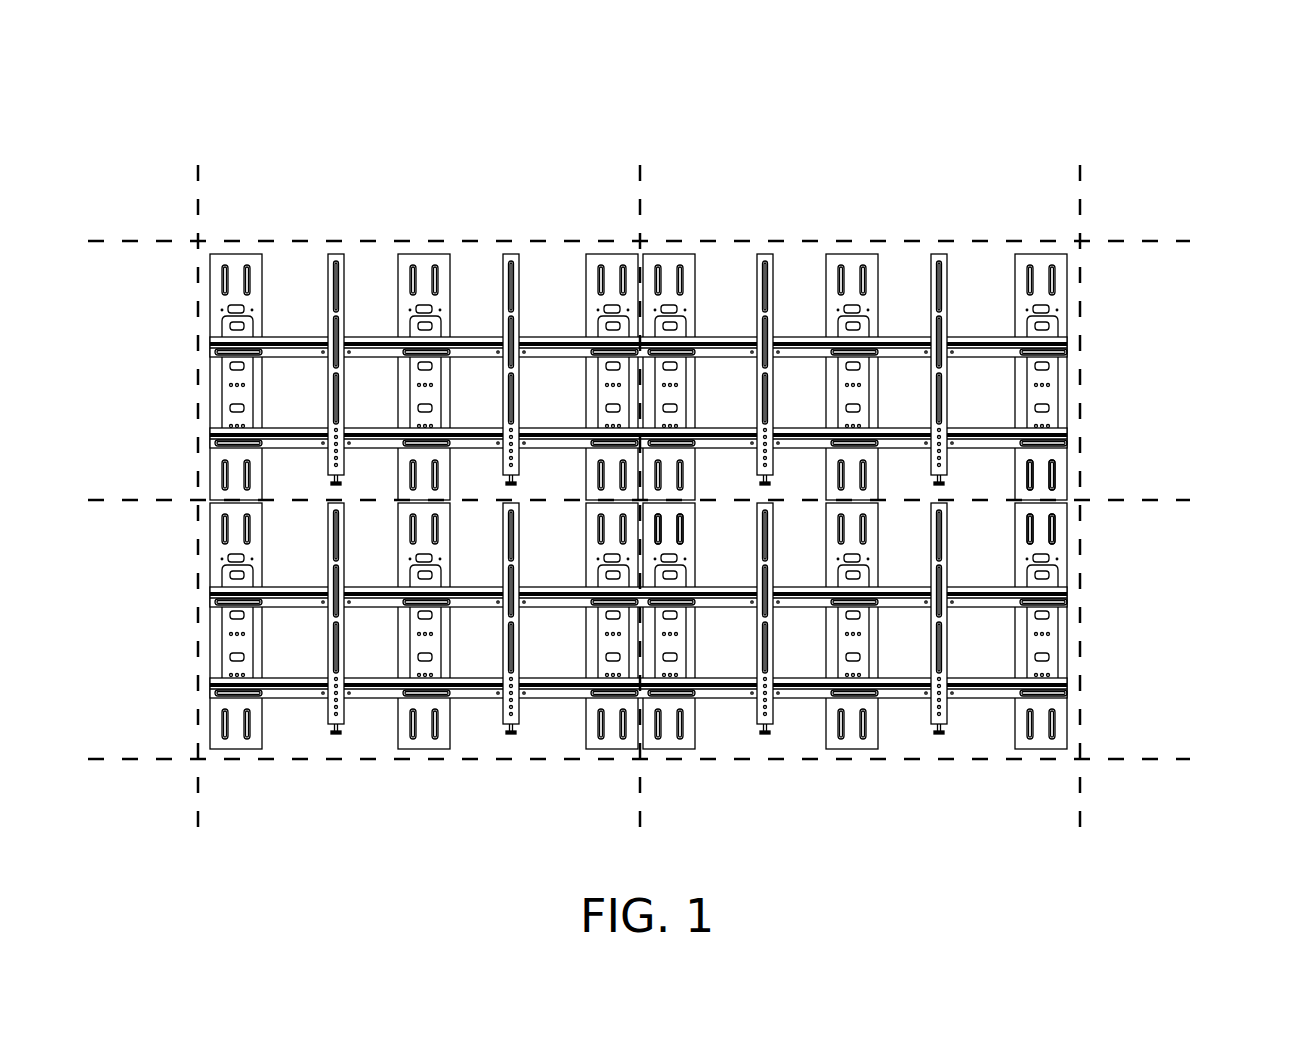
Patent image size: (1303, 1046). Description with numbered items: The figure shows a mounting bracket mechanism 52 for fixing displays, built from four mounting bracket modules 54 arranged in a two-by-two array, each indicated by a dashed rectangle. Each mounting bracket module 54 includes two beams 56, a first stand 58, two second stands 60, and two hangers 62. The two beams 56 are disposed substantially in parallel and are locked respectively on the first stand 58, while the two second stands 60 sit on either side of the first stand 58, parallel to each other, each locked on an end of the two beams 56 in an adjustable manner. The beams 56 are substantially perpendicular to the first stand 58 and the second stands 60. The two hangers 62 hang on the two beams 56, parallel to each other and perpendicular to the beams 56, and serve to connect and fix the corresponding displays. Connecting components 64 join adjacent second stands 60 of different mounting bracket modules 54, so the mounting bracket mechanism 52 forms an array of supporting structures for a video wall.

The mounting bracket mechanism 52 is at (1130, 152).
The mounting bracket module 54 is at (365, 222).
The beam 56 is at (1064, 343).
The first stand 58 is at (850, 255).
The second stand 60 is at (662, 255).
The hanger 62 is at (763, 255).
The connecting component 64 is at (1062, 484).